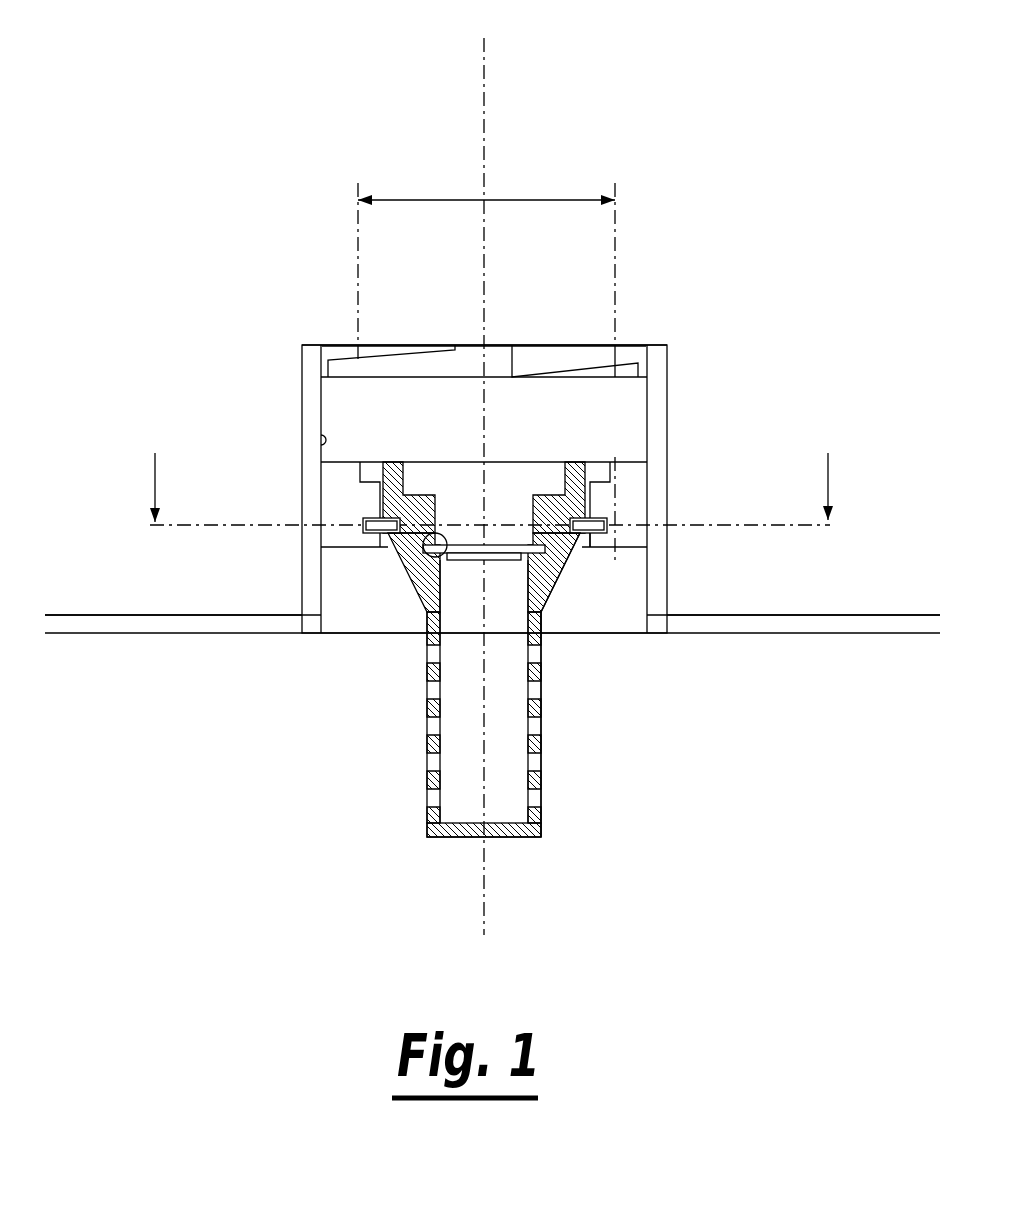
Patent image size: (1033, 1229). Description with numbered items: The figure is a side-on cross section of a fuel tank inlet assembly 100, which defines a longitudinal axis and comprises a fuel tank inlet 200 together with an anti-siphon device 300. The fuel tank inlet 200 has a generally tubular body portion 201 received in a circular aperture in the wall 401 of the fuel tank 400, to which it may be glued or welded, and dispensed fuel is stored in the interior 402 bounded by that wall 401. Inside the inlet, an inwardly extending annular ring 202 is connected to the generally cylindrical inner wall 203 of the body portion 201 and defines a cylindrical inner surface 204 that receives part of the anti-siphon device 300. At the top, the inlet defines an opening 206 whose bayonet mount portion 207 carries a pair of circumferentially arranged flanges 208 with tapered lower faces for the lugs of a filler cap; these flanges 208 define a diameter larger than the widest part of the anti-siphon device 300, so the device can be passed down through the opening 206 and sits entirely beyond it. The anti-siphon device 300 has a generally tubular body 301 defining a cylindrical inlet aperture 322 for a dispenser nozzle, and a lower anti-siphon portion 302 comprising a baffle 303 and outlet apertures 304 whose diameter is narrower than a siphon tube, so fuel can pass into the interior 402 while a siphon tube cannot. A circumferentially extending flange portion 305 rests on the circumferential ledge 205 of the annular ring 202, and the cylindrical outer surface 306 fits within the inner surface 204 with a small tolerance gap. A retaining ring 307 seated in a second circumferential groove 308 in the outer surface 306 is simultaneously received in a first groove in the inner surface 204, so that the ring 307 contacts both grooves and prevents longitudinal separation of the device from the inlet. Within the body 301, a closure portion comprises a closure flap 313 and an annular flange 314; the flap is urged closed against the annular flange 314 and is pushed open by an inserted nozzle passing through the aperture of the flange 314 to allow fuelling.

The fuel tank inlet assembly 100 is at (232, 202).
The fuel tank inlet 200 is at (717, 288).
The tubular body portion 201 is at (312, 361).
The annular ring 202 is at (330, 507).
The inner wall 203 is at (318, 447).
The inner surface 204 is at (595, 493).
The circumferential ledge 205 is at (367, 496).
The opening 206 is at (522, 330).
The bayonet mount portion 207 is at (343, 345).
The flanges 208 is at (387, 345).
The anti-siphon device 300 is at (568, 642).
The tubular body 301 is at (427, 608).
The anti-siphon portion 302 is at (397, 787).
The baffle 303 is at (490, 857).
The outlet apertures 304 is at (533, 765).
The flange portion 305 is at (377, 460).
The outer surface 306 is at (595, 503).
The retaining ring 307 is at (597, 532).
The second circumferentially extending groove 308 is at (597, 533).
The closure flap 313 is at (422, 605).
The annular flange 314 is at (397, 537).
The inlet aperture 322 is at (525, 445).
The fuel tank 400 is at (898, 582).
The wall 401 is at (103, 613).
The interior 402 is at (803, 684).